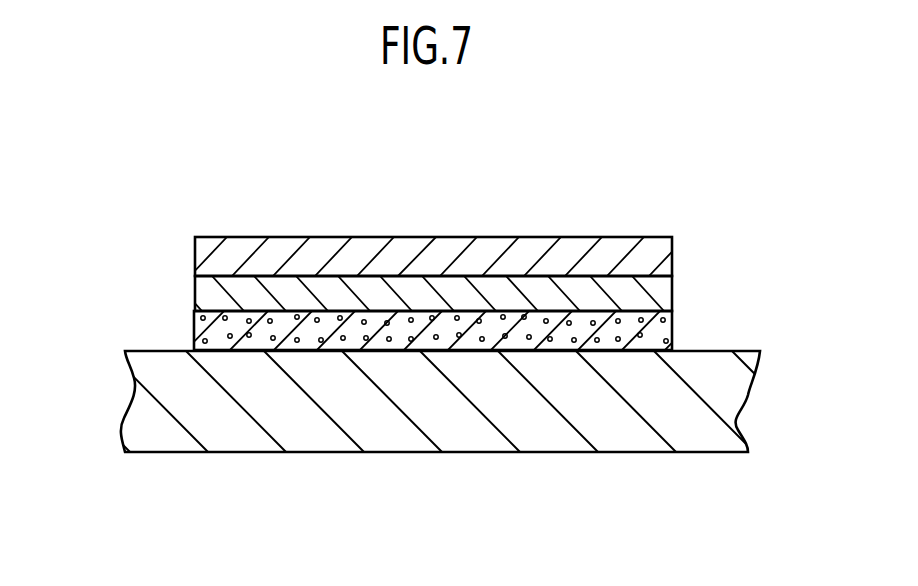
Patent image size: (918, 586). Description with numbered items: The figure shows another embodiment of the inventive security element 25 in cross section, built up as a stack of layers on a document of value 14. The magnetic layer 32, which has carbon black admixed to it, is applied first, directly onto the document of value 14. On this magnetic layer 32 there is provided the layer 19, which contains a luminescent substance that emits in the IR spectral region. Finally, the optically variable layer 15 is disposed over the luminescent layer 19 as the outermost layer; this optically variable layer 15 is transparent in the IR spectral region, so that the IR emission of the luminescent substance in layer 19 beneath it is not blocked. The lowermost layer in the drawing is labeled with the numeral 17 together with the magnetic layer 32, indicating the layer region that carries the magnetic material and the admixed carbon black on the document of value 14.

The document of value 14 is at (133, 430).
The optically variable layer 15 is at (207, 235).
The adhesive layer 17 is at (650, 332).
The layer containing a luminescent substance 19 is at (197, 293).
The security element 25 is at (228, 164).
The magnetic layer 32 is at (582, 317).